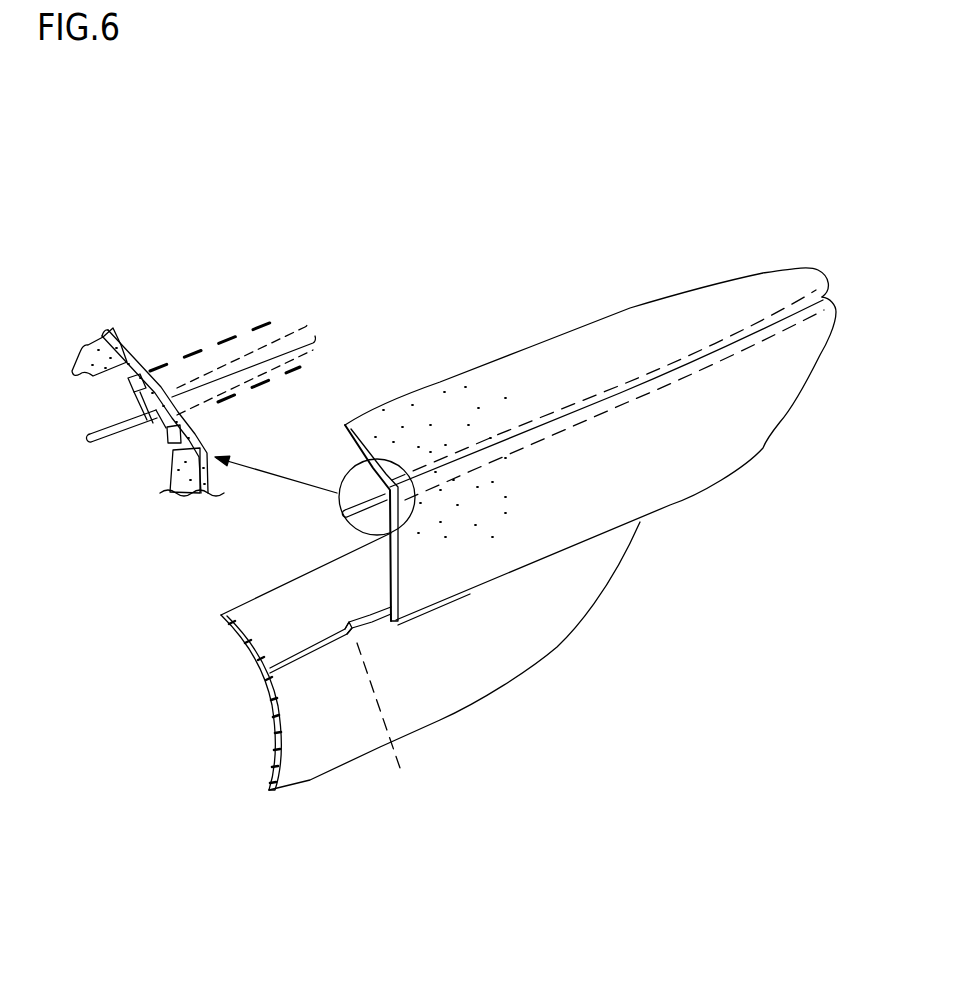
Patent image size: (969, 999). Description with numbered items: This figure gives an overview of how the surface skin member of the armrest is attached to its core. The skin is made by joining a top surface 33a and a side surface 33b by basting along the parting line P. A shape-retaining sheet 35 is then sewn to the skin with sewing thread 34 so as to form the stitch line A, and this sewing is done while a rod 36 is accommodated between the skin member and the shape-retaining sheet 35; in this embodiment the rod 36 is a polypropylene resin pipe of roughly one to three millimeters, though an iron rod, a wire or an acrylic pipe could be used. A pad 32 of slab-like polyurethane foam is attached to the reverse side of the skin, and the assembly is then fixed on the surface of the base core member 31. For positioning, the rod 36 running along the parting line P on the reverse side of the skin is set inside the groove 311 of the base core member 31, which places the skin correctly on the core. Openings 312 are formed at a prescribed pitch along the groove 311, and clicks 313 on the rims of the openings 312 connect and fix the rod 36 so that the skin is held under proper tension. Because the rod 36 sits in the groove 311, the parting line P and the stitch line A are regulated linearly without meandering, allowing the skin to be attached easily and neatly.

The base core member 31 is at (268, 713).
The groove 311 is at (318, 652).
The openings 312 is at (391, 723).
The clicks 313 is at (365, 640).
The pad 32 is at (80, 372).
The top surface 33a is at (238, 284).
The side surface 33b is at (323, 447).
The sewing thread 34 is at (188, 350).
The shape-retaining sheet 35 is at (160, 425).
The rod 36 is at (107, 447).
The stitch line A is at (757, 322).
The parting line P is at (678, 366).